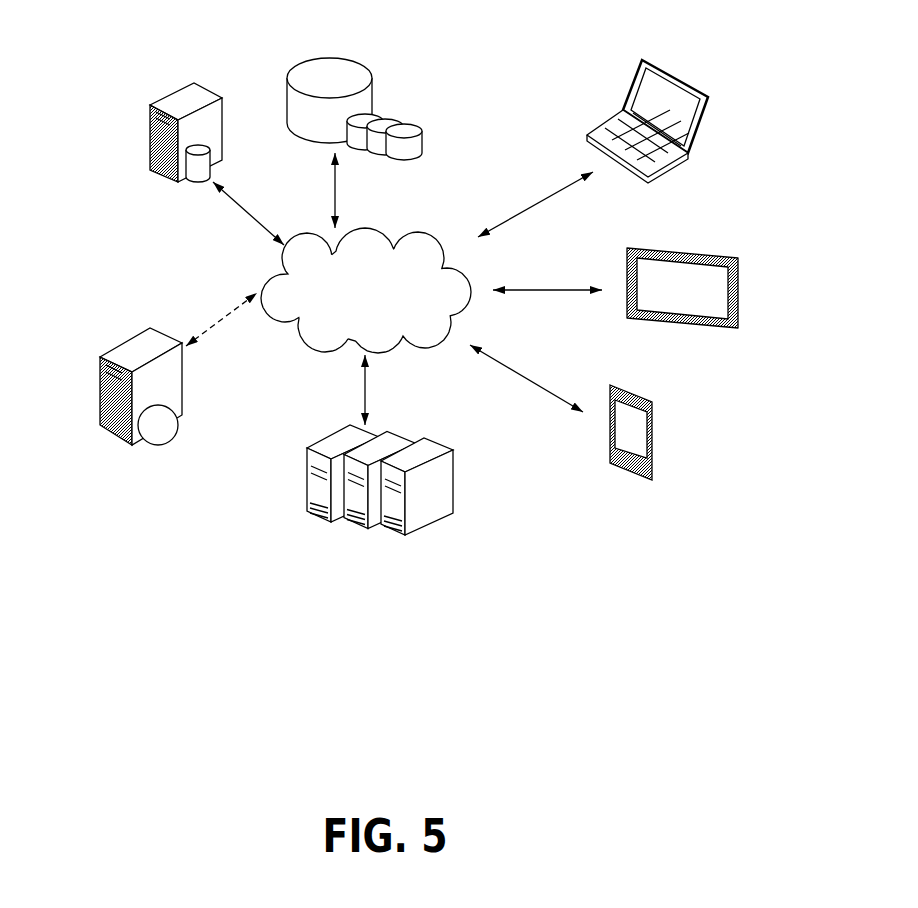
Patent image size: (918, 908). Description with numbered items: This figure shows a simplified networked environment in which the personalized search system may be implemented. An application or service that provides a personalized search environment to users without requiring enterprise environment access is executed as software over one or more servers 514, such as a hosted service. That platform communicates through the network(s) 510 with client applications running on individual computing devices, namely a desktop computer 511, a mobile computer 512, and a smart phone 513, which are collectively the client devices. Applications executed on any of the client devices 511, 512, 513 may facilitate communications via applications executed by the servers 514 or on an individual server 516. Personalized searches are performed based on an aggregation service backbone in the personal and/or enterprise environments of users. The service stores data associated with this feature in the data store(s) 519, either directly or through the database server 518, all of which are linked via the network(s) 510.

The network(s) 510 is at (372, 222).
The desktop computer 511 is at (680, 62).
The mobile computer 512 is at (712, 235).
The smart phone 513 is at (658, 402).
The servers 514 is at (332, 430).
The individual server 516 is at (122, 338).
The database server 518 is at (188, 190).
The data store(s) 519 is at (342, 40).